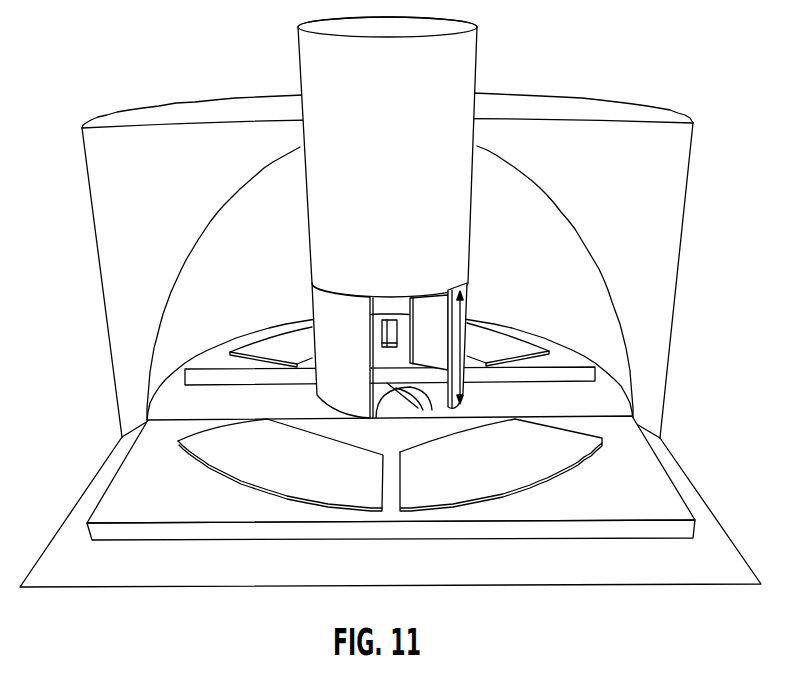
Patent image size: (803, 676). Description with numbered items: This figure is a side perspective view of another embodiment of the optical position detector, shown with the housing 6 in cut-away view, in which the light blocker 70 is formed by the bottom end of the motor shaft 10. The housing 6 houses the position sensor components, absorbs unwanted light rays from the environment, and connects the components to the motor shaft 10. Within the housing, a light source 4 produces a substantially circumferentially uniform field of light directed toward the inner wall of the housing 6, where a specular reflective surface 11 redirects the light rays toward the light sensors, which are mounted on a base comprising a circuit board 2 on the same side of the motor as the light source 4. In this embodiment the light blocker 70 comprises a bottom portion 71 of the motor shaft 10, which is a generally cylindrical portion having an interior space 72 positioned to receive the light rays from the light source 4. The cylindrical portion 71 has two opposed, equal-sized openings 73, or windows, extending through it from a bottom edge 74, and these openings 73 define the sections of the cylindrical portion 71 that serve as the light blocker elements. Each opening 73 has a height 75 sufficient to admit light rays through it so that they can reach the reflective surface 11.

The circuit board 2 is at (64, 582).
The light source 4 is at (382, 413).
The housing 6 is at (652, 166).
The motor shaft 10 is at (378, 80).
The specular reflective surface 11 is at (589, 257).
The light blocker 70 is at (286, 303).
The bottom portion of the motor shaft 71 is at (487, 305).
The interior space 72 is at (390, 353).
The openings 73 is at (431, 306).
The bottom edge 74 is at (459, 405).
The height 75 is at (467, 347).